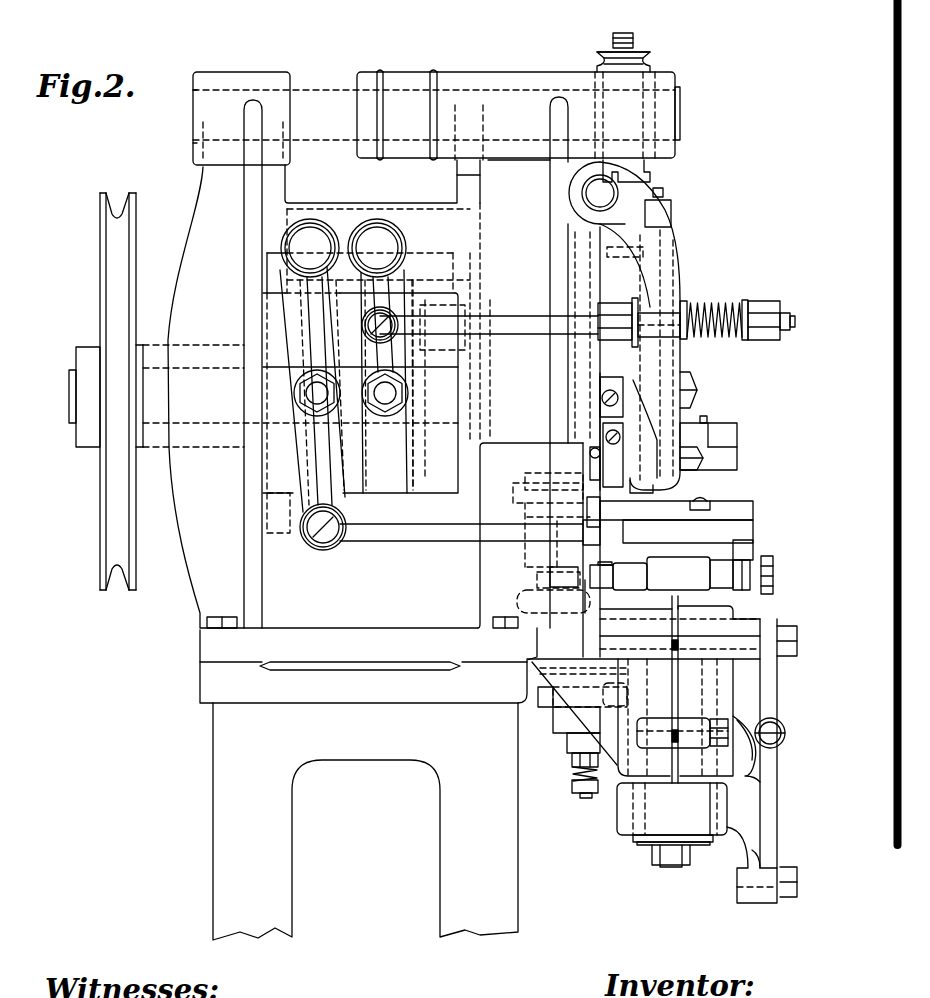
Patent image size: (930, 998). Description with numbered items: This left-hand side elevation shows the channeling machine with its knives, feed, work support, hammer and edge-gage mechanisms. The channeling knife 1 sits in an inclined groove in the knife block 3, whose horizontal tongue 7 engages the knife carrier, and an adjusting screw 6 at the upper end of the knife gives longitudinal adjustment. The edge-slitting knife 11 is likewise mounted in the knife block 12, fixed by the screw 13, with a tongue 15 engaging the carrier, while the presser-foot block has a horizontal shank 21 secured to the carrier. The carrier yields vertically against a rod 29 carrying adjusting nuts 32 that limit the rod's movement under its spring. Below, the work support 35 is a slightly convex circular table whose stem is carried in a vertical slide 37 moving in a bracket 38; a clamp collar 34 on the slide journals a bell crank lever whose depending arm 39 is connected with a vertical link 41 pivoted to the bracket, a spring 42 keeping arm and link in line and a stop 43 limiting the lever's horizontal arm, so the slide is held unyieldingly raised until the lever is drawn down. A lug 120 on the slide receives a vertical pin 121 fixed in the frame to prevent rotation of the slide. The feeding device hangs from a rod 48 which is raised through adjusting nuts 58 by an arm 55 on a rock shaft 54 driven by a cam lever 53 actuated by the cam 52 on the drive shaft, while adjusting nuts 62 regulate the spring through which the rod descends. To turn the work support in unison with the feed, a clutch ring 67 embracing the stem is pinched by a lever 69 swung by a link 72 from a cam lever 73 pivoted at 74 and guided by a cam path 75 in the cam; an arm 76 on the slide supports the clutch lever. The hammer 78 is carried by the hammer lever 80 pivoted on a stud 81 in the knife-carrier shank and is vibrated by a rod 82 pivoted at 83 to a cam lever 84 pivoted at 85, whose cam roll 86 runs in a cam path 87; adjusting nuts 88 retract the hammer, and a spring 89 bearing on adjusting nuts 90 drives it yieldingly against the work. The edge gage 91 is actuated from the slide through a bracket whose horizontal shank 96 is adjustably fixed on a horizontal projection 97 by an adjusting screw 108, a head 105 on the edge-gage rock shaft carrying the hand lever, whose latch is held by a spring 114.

The channeling knife 1 is at (655, 488).
The knife block 3 is at (738, 462).
The adjusting screw 6 is at (710, 418).
The horizontal tongue 7 is at (738, 447).
The edge-slitting knife 11 is at (620, 562).
The knife block 12 is at (580, 464).
The screw 13 is at (738, 430).
The tongue 15 is at (582, 457).
The horizontal shank 21 is at (650, 408).
The rod 29 is at (665, 192).
The adjusting nuts 32 is at (673, 210).
The clamp collar 34 is at (670, 813).
The work support 35 is at (755, 510).
The vertical slide 37 is at (717, 847).
The bracket 38 is at (723, 696).
The depending arm 39 is at (750, 845).
The vertical link 41 is at (772, 785).
The spring 42 is at (785, 733).
The stop 43 is at (747, 770).
The rod 48 is at (626, 33).
The cam 52 is at (433, 398).
The cam lever 53 is at (470, 185).
The rock shaft 54 is at (681, 105).
The arm 55 is at (655, 92).
The adjusting nuts 58 is at (650, 55).
The adjusting nuts 62 is at (652, 172).
The clutch ring 67 is at (727, 530).
The lever 69 is at (718, 520).
The link 72 is at (390, 540).
The cam lever 73 is at (303, 467).
The pivot 74 is at (310, 240).
The cam path 75 is at (300, 483).
The arm 76 is at (678, 573).
The hammer 78 is at (640, 475).
The hammer lever 80 is at (685, 277).
The stud 81 is at (598, 200).
The rod 82 is at (512, 320).
The pivotal connection 83 is at (400, 330).
The cam lever 84 is at (393, 315).
The pivot 85 is at (378, 242).
The cam roll 86 is at (443, 415).
The cam path 87 is at (383, 462).
The adjusting nuts 88 is at (613, 302).
The spring 89 is at (708, 302).
The adjusting nuts 90 is at (758, 300).
The edge gage 91 is at (590, 527).
The horizontal shank 96 is at (757, 545).
The horizontal projection 97 is at (715, 578).
The head 105 is at (550, 697).
The adjusting screw 108 is at (775, 578).
The spring 114 is at (572, 780).
The lug 120 is at (550, 574).
The vertical pin 121 is at (585, 597).